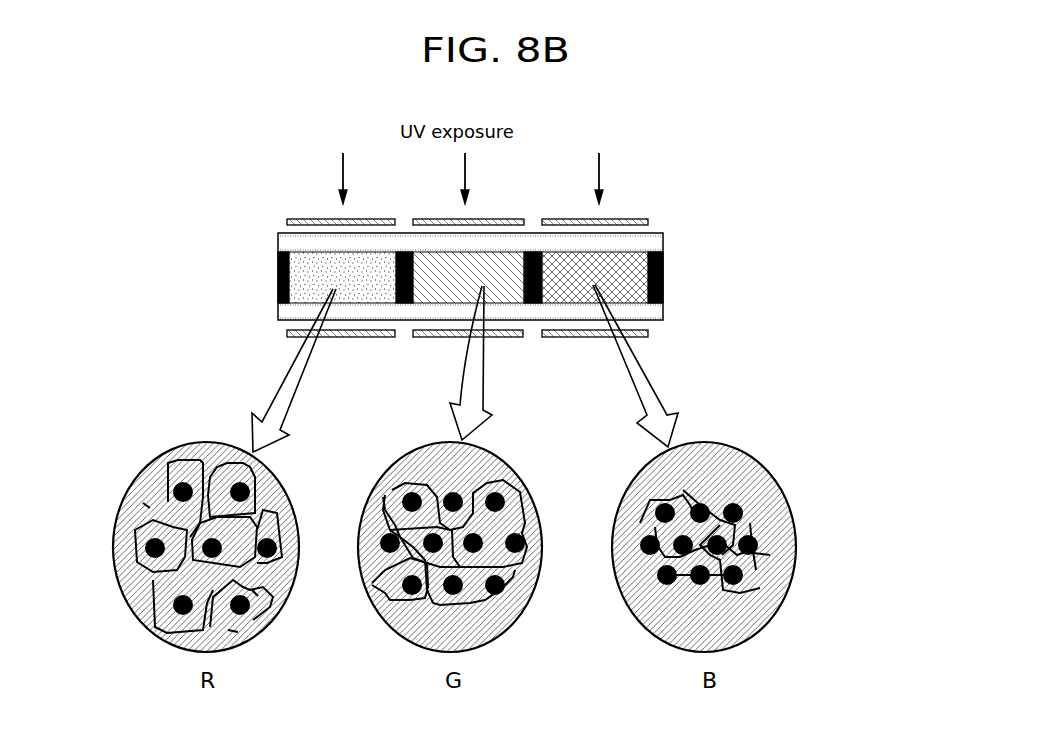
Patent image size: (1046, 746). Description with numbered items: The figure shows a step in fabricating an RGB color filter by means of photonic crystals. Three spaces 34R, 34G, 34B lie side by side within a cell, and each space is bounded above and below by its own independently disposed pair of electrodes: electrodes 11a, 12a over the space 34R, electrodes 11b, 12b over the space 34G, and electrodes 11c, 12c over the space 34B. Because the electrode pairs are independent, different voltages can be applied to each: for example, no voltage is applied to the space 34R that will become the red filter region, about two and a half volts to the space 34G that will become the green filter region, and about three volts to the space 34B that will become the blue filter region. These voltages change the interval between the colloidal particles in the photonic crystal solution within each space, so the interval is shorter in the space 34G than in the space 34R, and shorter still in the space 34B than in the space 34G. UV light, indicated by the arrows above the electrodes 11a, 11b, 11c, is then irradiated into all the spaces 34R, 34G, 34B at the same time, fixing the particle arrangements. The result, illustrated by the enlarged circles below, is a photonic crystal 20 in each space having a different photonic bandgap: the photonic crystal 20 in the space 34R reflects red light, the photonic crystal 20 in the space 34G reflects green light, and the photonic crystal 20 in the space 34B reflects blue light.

The electrode 11a is at (287, 221).
The electrode 11b is at (503, 219).
The electrode 11c is at (636, 219).
The electrode 12a is at (287, 333).
The electrode 12b is at (430, 337).
The electrode 12c is at (575, 337).
The space 34R is at (365, 288).
The space 34G is at (502, 288).
The space 34B is at (632, 286).
The photonic crystal 20 is at (142, 638).